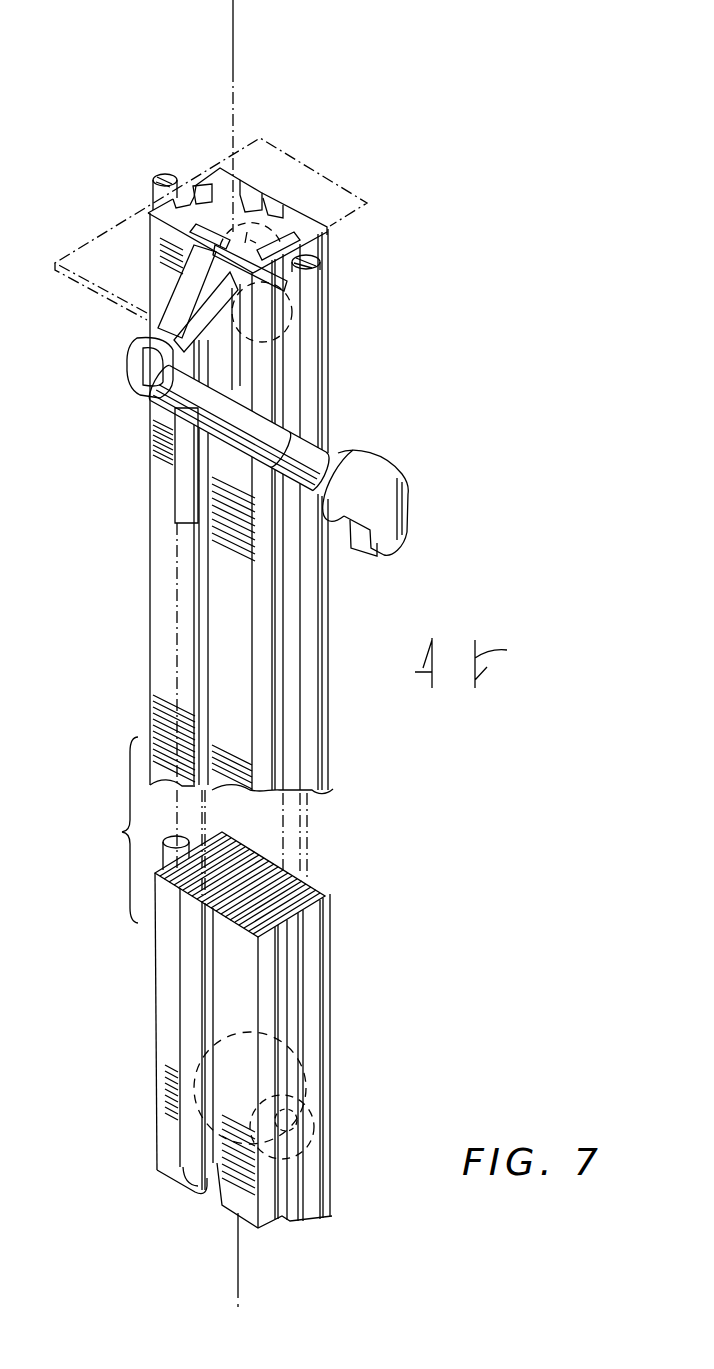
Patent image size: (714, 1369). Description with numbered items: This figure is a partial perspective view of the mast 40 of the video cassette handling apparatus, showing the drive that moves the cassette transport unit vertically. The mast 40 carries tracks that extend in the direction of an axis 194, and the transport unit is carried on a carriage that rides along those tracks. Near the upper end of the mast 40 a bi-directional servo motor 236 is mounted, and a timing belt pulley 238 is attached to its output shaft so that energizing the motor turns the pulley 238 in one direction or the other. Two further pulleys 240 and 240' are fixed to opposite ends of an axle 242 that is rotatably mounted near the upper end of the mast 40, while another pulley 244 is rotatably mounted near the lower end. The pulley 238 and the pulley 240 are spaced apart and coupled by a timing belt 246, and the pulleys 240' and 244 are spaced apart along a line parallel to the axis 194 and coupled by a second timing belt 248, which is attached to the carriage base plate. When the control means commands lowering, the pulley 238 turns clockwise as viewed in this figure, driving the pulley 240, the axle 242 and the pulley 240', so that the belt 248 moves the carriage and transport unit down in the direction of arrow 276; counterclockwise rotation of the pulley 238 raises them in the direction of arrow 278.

The axis 194 is at (234, 30).
The mast 40 is at (152, 632).
The bi-directional motor 236 is at (398, 433).
The pulley 238 is at (127, 380).
The pulley 240 is at (353, 271).
The pulley 240' is at (229, 229).
The axle 242 is at (287, 327).
The pulley 244 is at (200, 1035).
The belt 246 is at (158, 333).
The belt 248 is at (187, 480).
The arrow 276 is at (514, 664).
The arrow 278 is at (402, 663).